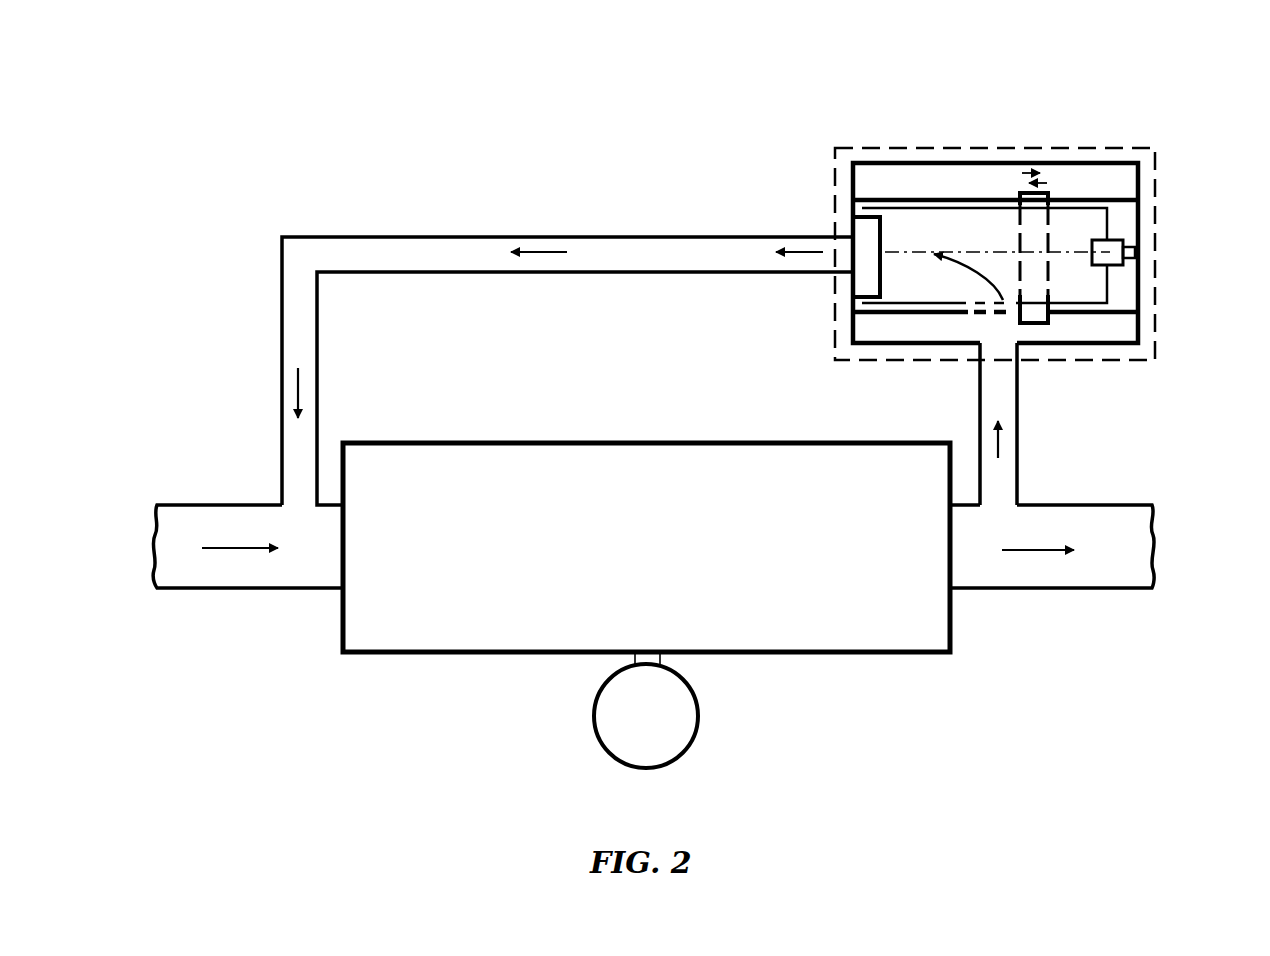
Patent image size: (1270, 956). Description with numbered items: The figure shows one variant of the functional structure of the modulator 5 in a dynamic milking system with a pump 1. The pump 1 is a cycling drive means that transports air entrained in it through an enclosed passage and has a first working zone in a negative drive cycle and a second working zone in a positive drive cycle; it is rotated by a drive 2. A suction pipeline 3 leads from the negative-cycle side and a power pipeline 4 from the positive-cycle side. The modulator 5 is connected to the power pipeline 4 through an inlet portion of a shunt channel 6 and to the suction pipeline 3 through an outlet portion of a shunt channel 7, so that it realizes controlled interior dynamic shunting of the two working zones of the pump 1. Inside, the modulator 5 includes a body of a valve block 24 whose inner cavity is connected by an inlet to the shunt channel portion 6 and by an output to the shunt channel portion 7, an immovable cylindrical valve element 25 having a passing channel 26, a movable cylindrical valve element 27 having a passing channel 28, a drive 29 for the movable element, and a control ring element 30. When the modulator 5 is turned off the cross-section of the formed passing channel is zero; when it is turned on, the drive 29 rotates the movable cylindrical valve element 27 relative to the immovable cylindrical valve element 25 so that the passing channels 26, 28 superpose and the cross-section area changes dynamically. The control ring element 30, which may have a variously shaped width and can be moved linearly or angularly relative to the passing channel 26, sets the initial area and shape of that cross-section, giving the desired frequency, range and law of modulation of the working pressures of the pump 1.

The pump 1 is at (458, 628).
The drive 2 is at (677, 727).
The suction pipeline 3 is at (205, 573).
The power pipeline 4 is at (1128, 577).
The modulator 5 is at (1156, 312).
The inlet portion of shunt channel 6 is at (1017, 487).
The outlet portion of shunt channel 7 is at (735, 237).
The body of valve block 24 is at (850, 165).
The immovable cylindrical valve element 25 is at (930, 197).
The passing channel 26 is at (983, 308).
The movable cylindrical valve element 27 is at (1108, 290).
The passing channel 28 is at (1030, 306).
The drive of movable cylindrical valve element 29 is at (1105, 253).
The control (ring) element 30 is at (1020, 235).